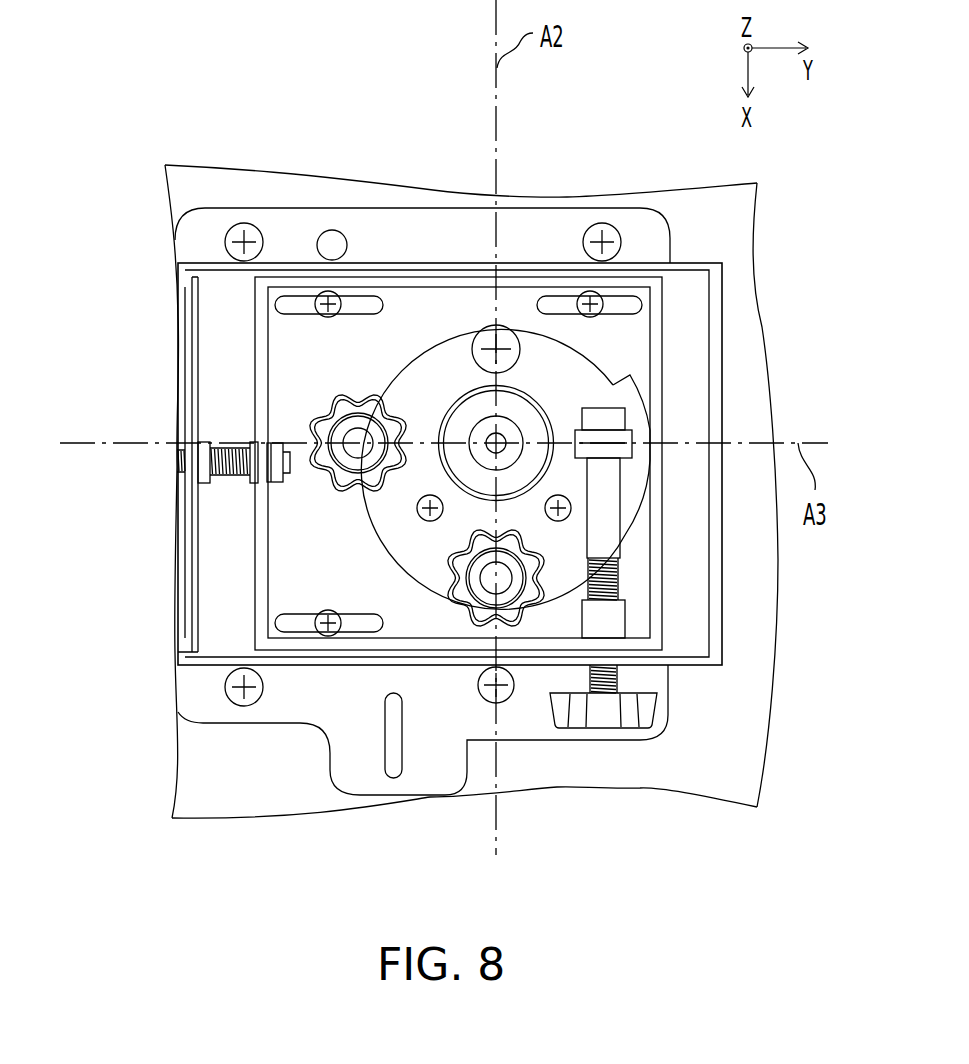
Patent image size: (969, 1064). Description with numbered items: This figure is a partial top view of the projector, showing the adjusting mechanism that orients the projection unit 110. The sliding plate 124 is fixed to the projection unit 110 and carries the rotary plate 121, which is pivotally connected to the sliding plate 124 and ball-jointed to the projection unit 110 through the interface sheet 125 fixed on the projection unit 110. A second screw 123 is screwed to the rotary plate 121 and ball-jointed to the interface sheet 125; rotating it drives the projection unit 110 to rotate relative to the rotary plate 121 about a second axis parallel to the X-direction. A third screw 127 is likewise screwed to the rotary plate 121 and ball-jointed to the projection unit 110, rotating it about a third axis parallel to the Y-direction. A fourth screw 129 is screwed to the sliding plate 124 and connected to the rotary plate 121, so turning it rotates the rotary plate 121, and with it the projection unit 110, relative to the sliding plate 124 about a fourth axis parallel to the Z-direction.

The projection unit 110 is at (748, 327).
The rotary plate 121 is at (553, 357).
The second screw 123 is at (363, 445).
The sliding plate 124 is at (452, 303).
The interface sheet 125 is at (640, 232).
The third screw 127 is at (488, 580).
The fourth screw 129 is at (550, 586).